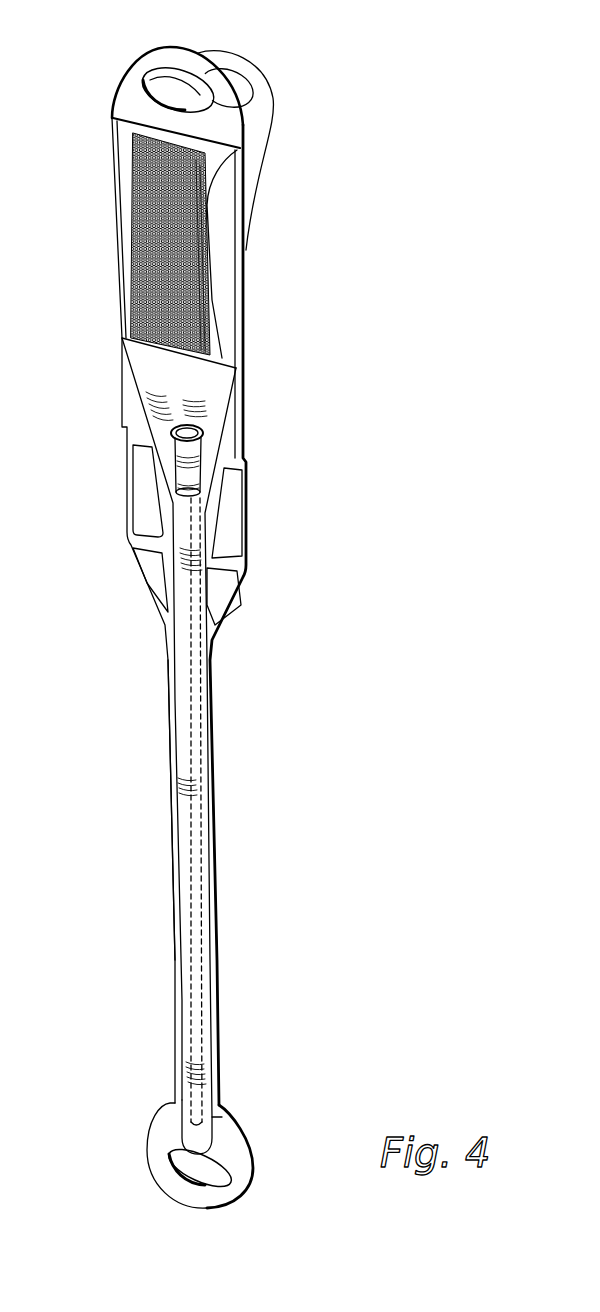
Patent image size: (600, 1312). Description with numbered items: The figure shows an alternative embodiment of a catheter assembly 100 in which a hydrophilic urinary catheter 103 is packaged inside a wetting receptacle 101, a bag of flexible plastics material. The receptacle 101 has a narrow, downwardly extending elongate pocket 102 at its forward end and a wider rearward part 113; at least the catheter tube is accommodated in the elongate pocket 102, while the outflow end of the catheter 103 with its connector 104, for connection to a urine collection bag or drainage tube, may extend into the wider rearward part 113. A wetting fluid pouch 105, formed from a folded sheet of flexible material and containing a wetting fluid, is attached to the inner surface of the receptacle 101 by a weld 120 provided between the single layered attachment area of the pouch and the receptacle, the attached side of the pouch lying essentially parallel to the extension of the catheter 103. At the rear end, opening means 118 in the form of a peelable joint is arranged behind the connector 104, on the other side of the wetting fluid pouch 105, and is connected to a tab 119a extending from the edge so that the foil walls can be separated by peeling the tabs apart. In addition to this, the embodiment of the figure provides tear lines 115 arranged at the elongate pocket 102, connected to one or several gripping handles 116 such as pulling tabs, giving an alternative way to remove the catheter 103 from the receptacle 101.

The catheter assembly 100 is at (263, 733).
The wetting receptacle 101 is at (220, 602).
The elongate pocket 102 is at (202, 928).
The hydrophilic urinary catheter 103 is at (193, 840).
The connector 104 is at (200, 445).
The wetting fluid pouch 105 is at (170, 237).
The wider rearward part 113 is at (181, 376).
The tear lines 115 is at (226, 458).
The gripping handles 116 is at (143, 569).
The opening means 118 is at (247, 152).
The tab 119a is at (137, 64).
The weld 120 is at (193, 290).